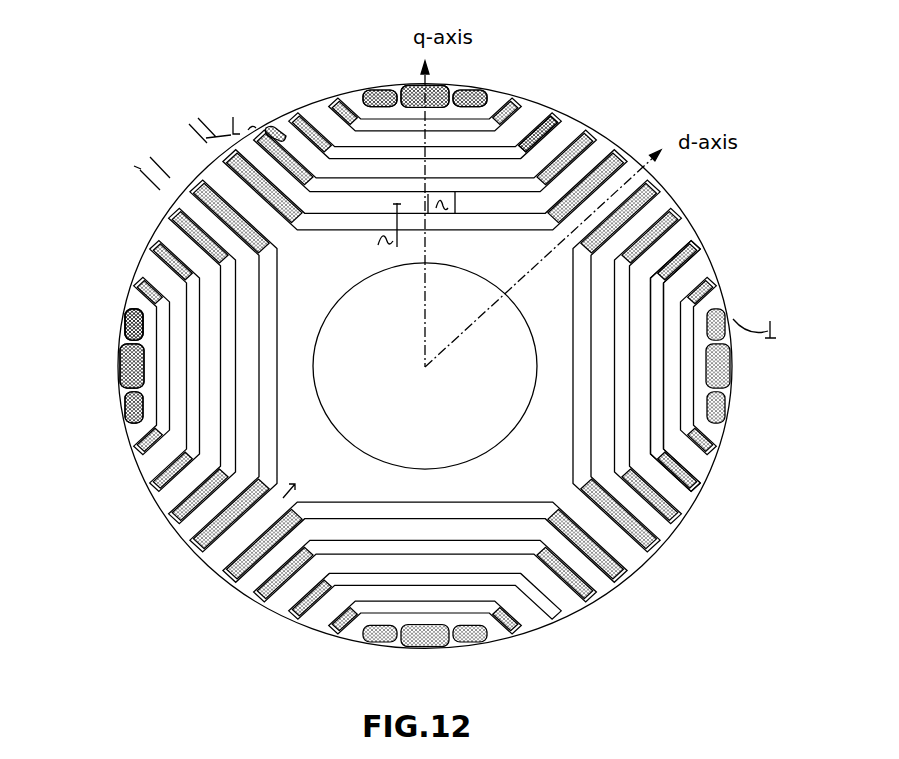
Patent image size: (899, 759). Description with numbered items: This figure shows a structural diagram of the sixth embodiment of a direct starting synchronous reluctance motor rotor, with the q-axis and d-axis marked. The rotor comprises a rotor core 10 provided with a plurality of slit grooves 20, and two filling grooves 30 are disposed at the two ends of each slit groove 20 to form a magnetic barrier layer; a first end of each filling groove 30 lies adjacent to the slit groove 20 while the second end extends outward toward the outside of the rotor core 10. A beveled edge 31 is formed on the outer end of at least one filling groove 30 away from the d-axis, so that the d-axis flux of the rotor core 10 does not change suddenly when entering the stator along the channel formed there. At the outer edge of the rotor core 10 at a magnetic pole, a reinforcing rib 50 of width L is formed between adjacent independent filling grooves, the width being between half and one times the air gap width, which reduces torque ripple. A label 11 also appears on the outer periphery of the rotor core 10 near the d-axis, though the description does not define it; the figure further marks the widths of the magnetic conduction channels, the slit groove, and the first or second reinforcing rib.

The rotor core 10 is at (472, 94).
The rotor core 11 is at (672, 222).
The slit groove 20 is at (658, 317).
The filling groove 30 is at (543, 125).
The beveled edge 31 is at (262, 127).
The reinforcing rib 50 is at (127, 340).